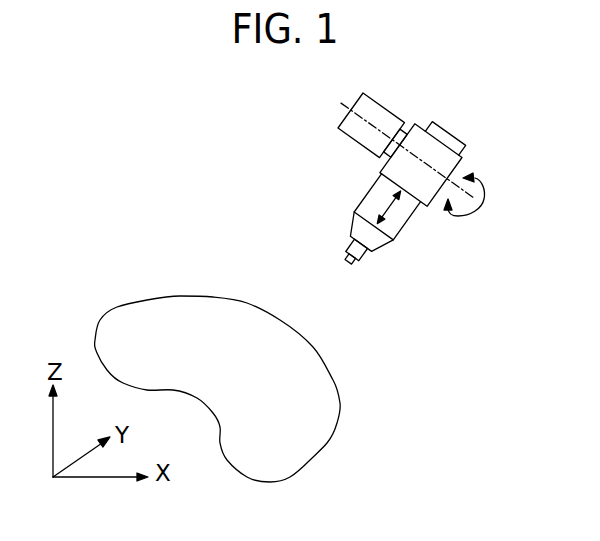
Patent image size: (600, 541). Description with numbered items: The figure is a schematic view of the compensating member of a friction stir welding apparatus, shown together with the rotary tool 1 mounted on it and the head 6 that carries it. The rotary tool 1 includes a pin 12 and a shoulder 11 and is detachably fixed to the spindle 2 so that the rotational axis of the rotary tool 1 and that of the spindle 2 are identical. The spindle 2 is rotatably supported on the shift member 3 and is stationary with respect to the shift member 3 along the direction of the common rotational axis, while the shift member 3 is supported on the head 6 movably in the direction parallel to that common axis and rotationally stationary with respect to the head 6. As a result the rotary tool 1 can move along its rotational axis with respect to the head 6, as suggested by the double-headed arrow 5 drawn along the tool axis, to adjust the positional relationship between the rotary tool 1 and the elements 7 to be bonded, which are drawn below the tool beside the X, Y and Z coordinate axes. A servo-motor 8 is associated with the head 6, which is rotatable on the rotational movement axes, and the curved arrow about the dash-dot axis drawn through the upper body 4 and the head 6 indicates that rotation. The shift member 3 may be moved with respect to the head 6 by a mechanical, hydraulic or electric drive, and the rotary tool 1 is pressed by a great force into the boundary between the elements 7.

The rotary tool 1 is at (347, 250).
The spindle 2 is at (350, 227).
The shift member 3 is at (368, 192).
The rotary drive unit 4 is at (341, 104).
The nozzle advancing/retracting direction 5 is at (389, 207).
The head 6 is at (460, 157).
The elements to be bonded 7 is at (333, 400).
The servo-motor 8 is at (392, 113).
The shoulder 11 is at (362, 256).
The pin 12 is at (356, 262).